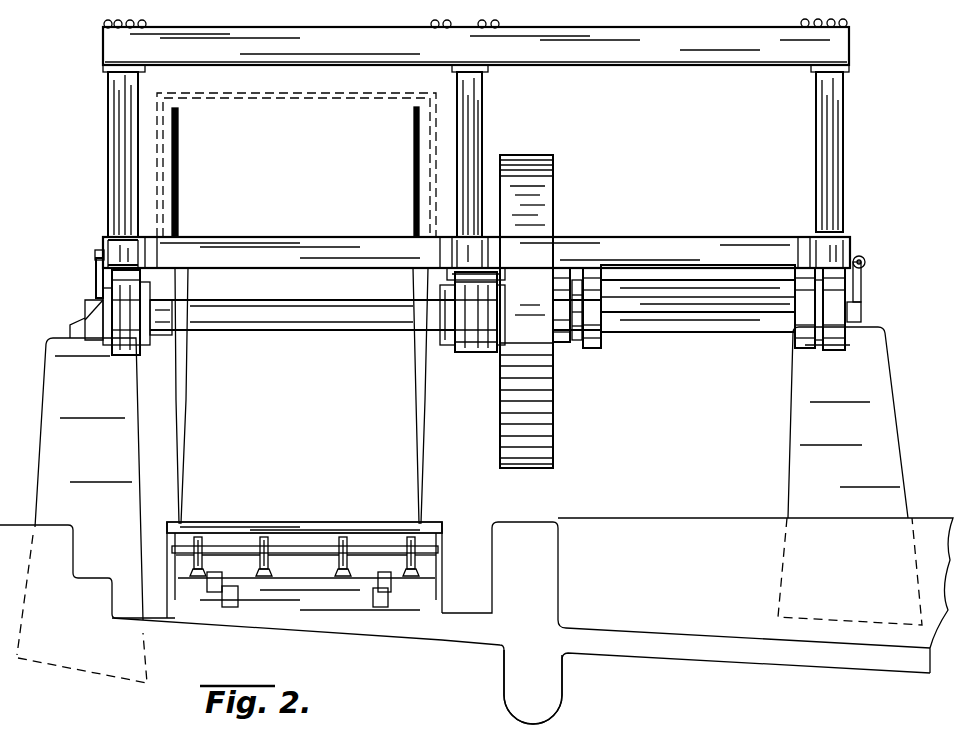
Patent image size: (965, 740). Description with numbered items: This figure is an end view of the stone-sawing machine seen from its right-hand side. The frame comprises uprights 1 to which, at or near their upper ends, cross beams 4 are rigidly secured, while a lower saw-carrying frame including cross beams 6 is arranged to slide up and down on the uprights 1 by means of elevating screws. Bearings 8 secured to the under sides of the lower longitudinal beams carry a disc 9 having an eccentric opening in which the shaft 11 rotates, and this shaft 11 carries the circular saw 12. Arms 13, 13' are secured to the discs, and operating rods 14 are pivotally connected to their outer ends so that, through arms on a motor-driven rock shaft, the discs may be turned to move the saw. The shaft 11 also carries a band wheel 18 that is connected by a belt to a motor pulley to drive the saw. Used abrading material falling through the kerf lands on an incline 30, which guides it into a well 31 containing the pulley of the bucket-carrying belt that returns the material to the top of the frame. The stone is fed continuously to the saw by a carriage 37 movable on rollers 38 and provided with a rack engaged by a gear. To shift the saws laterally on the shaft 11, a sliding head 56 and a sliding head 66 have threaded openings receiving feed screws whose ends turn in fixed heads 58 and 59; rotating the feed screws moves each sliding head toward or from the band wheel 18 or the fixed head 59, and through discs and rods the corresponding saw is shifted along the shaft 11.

The uprights 1 is at (118, 112).
The cross beams 4 is at (664, 42).
The cross beams 6 is at (640, 247).
The bearings 8 is at (103, 300).
The disc 9 is at (147, 338).
The shaft 11 is at (682, 312).
The circular saw 12 is at (180, 200).
The arm 13 is at (74, 278).
The arm 13' is at (524, 241).
The operating rods 14 is at (97, 259).
The band wheel 18 is at (530, 443).
The incline 30 is at (356, 622).
The well 31 is at (515, 687).
The carriage 37 is at (270, 529).
The rollers 38 is at (200, 537).
The sliding head 56 is at (593, 346).
The fixed head 58 is at (563, 342).
The fixed head 59 is at (833, 350).
The sliding head 66 is at (807, 345).